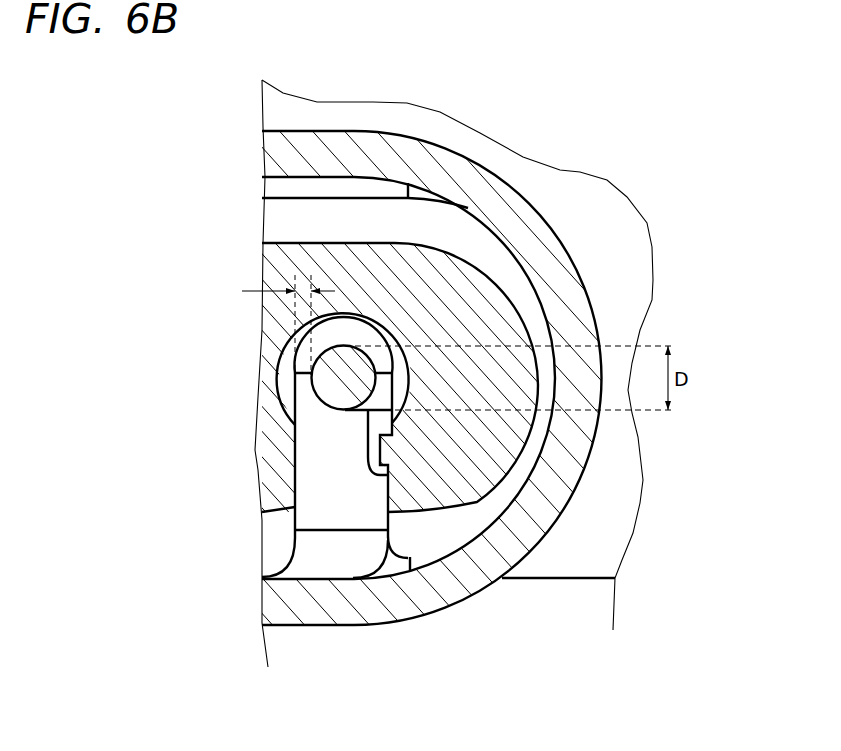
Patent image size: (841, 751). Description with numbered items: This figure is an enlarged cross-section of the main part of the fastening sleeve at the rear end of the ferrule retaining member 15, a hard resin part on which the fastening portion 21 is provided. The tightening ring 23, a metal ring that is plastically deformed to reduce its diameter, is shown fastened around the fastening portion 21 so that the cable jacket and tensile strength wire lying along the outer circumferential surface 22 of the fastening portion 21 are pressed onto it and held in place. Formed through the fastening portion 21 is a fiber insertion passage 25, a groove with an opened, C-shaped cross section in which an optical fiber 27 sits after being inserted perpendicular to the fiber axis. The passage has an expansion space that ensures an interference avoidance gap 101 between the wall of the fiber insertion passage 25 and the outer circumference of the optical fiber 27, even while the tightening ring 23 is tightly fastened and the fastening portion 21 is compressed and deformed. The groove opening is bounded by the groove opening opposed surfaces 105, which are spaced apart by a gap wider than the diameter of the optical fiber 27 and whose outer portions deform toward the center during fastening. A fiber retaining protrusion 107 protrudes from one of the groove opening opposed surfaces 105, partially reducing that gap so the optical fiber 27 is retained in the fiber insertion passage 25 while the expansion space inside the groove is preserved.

The ferrule retaining member 15 is at (570, 582).
The fastening portion 21 is at (382, 192).
The outer circumferential surface 22 is at (337, 198).
The tightening ring 23 is at (492, 160).
The fiber insertion passage 25 is at (368, 375).
The optical fiber 27 is at (329, 407).
The interference avoidance gap 101 is at (265, 325).
The groove opening opposed surfaces 105 is at (295, 479).
The fiber retaining protrusion 107 is at (400, 459).